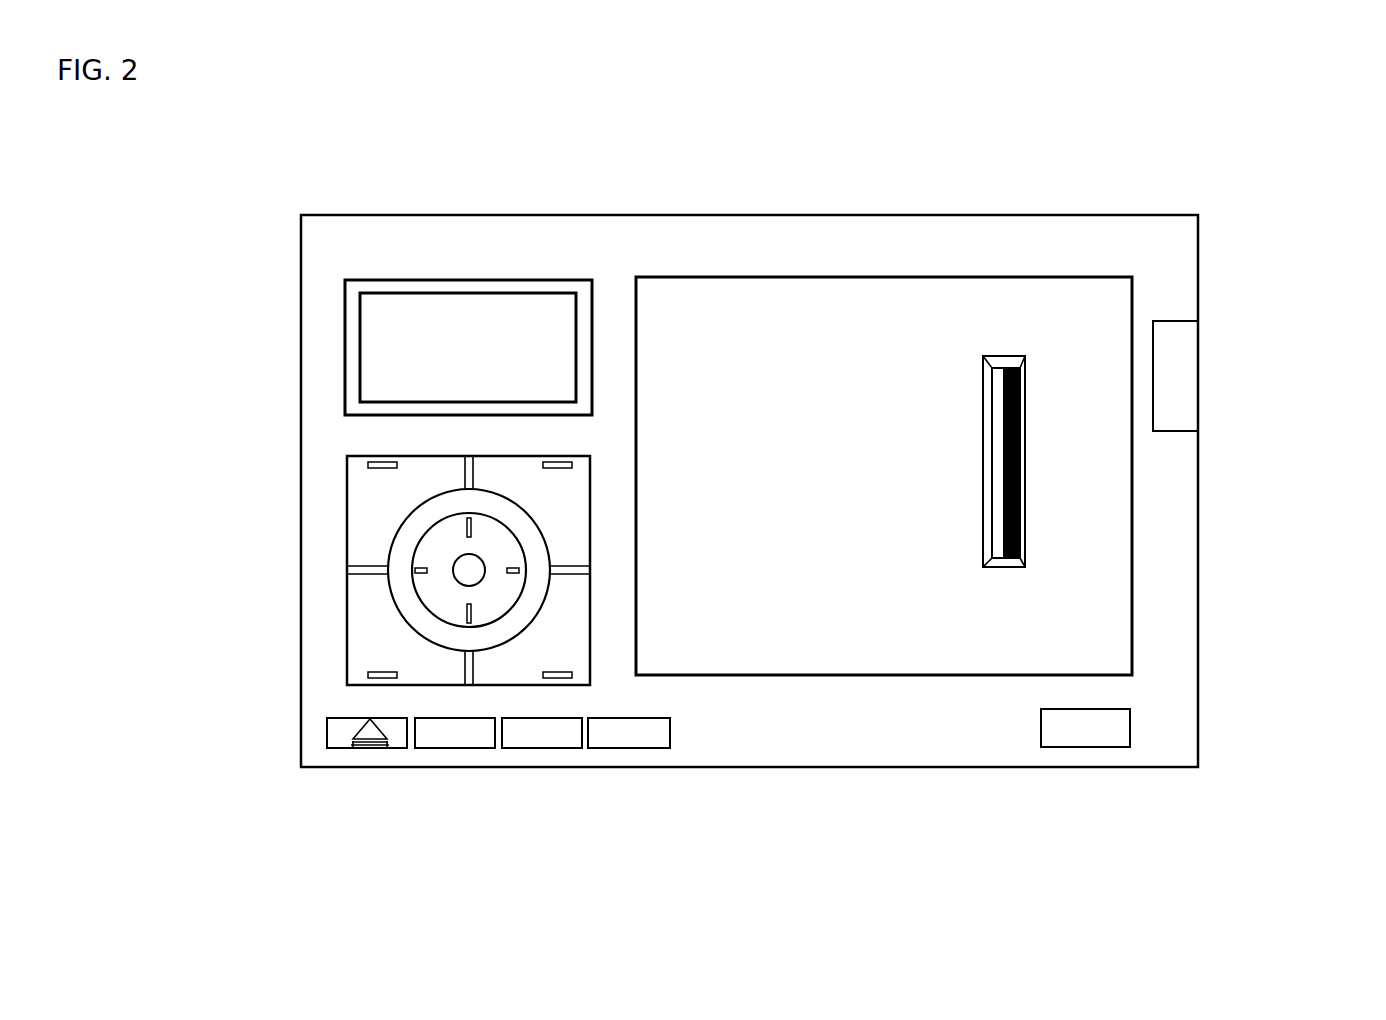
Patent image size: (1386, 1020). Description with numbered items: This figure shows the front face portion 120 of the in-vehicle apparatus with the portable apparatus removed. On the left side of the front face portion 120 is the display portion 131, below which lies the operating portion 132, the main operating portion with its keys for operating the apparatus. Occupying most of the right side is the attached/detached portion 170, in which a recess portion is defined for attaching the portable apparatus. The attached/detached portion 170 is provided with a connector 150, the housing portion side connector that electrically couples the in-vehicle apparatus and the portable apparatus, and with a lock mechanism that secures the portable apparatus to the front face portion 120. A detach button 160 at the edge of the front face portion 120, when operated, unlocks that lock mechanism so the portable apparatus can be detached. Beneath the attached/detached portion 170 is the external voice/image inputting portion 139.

The front face portion 120 is at (482, 243).
The display portion 131 is at (385, 355).
The operating portion 132 is at (318, 553).
The external voice/image inputting portion 139 is at (1089, 740).
The connector 150 is at (1020, 502).
The detach button 160 is at (1180, 378).
The attached/detached portion 170 is at (845, 600).